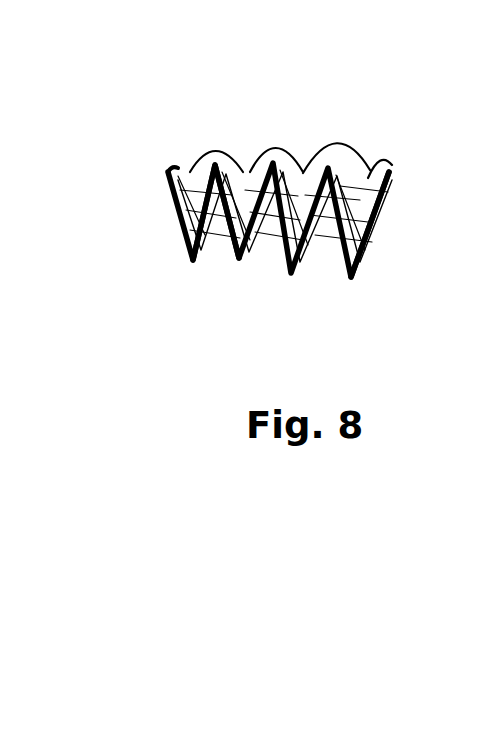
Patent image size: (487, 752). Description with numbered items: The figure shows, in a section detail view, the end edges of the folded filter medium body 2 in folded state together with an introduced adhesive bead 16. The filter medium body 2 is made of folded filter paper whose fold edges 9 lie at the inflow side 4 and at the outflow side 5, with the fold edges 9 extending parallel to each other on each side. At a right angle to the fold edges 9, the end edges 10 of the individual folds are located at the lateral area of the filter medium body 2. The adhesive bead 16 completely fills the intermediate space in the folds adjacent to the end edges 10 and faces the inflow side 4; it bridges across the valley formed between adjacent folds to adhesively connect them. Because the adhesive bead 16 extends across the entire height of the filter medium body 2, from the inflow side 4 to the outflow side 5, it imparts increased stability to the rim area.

The filter medium body 2 is at (155, 195).
The inflow side 4 is at (183, 137).
The outflow side 5 is at (216, 246).
The fold edges 9 is at (333, 170).
The end edges 10 is at (345, 242).
The adhesive bead 16 is at (228, 167).